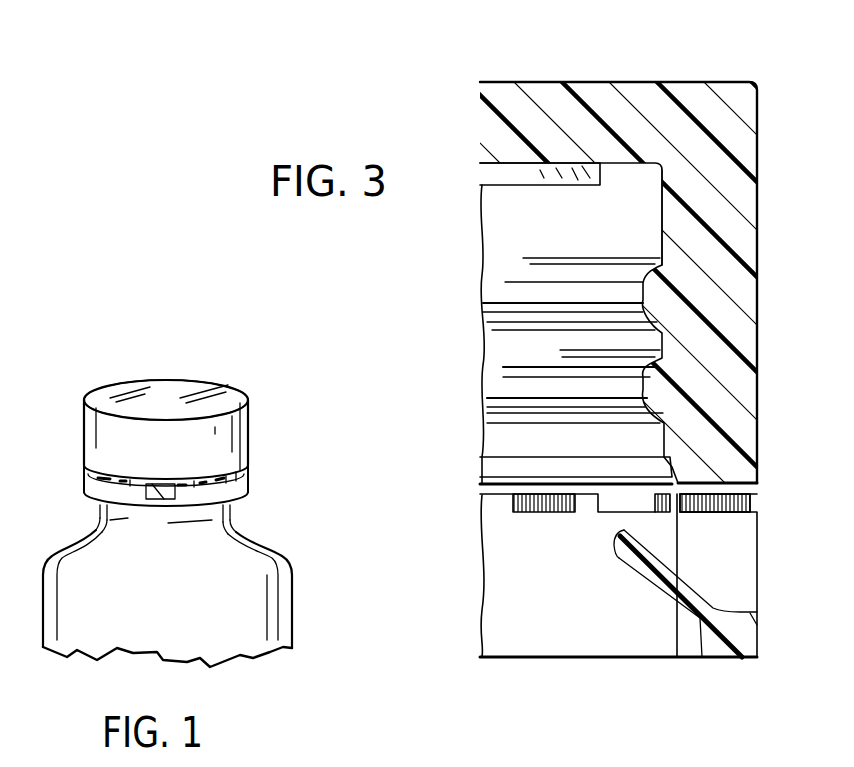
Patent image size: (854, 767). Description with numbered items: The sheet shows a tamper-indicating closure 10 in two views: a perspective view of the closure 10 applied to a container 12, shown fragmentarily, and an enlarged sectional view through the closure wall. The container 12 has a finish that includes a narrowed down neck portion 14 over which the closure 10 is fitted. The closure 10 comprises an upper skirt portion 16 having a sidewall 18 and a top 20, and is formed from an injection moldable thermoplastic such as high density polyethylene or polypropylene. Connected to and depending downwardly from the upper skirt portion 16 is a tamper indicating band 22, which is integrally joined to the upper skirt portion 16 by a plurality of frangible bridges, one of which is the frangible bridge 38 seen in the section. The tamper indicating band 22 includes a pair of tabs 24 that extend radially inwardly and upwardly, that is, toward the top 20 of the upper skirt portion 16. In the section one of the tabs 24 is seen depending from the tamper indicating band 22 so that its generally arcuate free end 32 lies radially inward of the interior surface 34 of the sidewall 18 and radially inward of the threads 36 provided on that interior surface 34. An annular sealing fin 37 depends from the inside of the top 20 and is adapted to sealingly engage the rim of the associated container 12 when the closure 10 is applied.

In FIG. 1, the closure 10 is at (255, 393).
In FIG. 1, the container 12 is at (293, 579).
In FIG. 1, the neck portion 14 is at (240, 513).
In FIG. 1, the upper skirt portion 16 is at (82, 402).
In FIG. 3, the upper skirt portion 16 is at (722, 178).
In FIG. 1, the sidewall 18 is at (248, 427).
In FIG. 3, the sidewall 18 is at (758, 298).
In FIG. 1, the top 20 is at (170, 392).
In FIG. 3, the top 20 is at (520, 82).
In FIG. 1, the tamper indicating band 22 is at (85, 490).
In FIG. 3, the tamper indicating band 22 is at (748, 637).
In FIG. 1, the tabs 24 is at (160, 498).
In FIG. 3, the tabs 24 is at (628, 556).
In FIG. 3, the free end 32 is at (624, 530).
In FIG. 3, the interior surface 34 is at (660, 213).
In FIG. 3, the threads 36 is at (643, 290).
In FIG. 3, the annular sealing fin 37 is at (605, 177).
In FIG. 3, the frangible bridge 38 is at (678, 487).